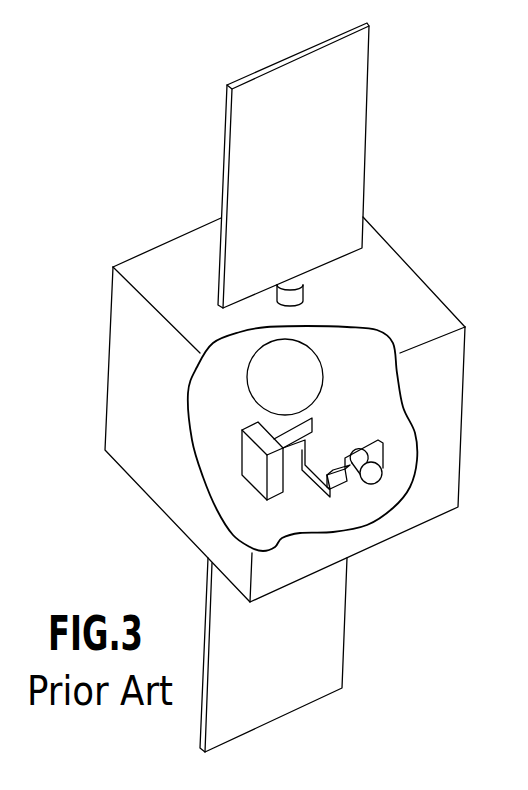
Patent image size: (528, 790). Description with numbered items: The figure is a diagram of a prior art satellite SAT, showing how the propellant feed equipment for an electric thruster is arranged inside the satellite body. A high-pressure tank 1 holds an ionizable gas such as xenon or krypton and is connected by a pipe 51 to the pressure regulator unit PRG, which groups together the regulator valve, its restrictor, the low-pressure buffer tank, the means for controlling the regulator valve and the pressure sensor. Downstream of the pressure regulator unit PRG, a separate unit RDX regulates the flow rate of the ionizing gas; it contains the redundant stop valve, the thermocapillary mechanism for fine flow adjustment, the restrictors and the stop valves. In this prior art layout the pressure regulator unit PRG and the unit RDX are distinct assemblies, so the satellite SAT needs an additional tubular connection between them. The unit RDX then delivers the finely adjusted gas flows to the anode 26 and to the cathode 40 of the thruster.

The satellite SAT is at (172, 203).
The high-pressure tank 1 is at (308, 372).
The pipe 51 is at (312, 418).
The pressure regulator unit PRG is at (248, 458).
The unit for regulating the flow rate of ionizing gas RDX is at (330, 466).
The cathode 40 is at (395, 461).
The anode 26 is at (363, 486).